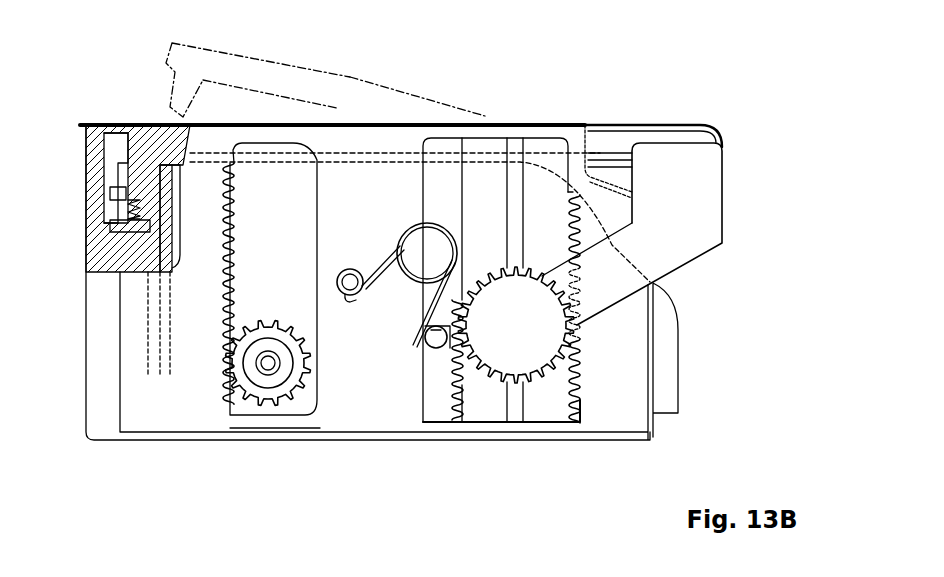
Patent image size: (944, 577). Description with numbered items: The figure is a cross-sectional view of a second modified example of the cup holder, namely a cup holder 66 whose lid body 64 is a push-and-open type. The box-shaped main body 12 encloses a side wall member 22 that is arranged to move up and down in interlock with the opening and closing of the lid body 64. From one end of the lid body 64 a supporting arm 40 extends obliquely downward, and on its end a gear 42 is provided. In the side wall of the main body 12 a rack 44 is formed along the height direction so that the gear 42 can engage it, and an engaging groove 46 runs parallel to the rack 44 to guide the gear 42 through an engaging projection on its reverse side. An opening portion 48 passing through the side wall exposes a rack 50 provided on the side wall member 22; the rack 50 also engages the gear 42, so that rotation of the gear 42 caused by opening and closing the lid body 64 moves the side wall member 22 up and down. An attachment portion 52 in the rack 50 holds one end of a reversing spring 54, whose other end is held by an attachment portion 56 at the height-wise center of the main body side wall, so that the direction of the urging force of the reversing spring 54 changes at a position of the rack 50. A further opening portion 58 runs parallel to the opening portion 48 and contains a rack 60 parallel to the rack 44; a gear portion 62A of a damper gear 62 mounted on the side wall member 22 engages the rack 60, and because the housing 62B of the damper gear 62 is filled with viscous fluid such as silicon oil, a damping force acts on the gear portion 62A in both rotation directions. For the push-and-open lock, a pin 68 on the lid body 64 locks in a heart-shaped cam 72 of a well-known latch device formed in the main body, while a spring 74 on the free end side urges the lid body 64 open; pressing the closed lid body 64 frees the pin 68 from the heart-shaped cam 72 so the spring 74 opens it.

The main body 12 is at (150, 446).
The side wall member 22 is at (123, 275).
The supporting arm 40 is at (673, 255).
The gear 42 is at (523, 328).
The rack 44 is at (567, 360).
The engaging groove 46 is at (520, 413).
The opening portion 48 is at (443, 420).
The rack 50 is at (437, 403).
The attachment portion 52 is at (422, 363).
The reversing spring 54 is at (417, 223).
The attachment portion 56 is at (353, 270).
The opening portion 58 is at (313, 398).
The rack 60 is at (242, 243).
The damper gear 62 is at (262, 431).
The gear portion 62A is at (243, 393).
The housing 62B is at (278, 405).
The lid body 64 is at (338, 138).
The cup holder 66 is at (643, 68).
The pin 68 is at (167, 110).
The heart-shaped cam 72 is at (110, 207).
The spring 74 is at (130, 222).